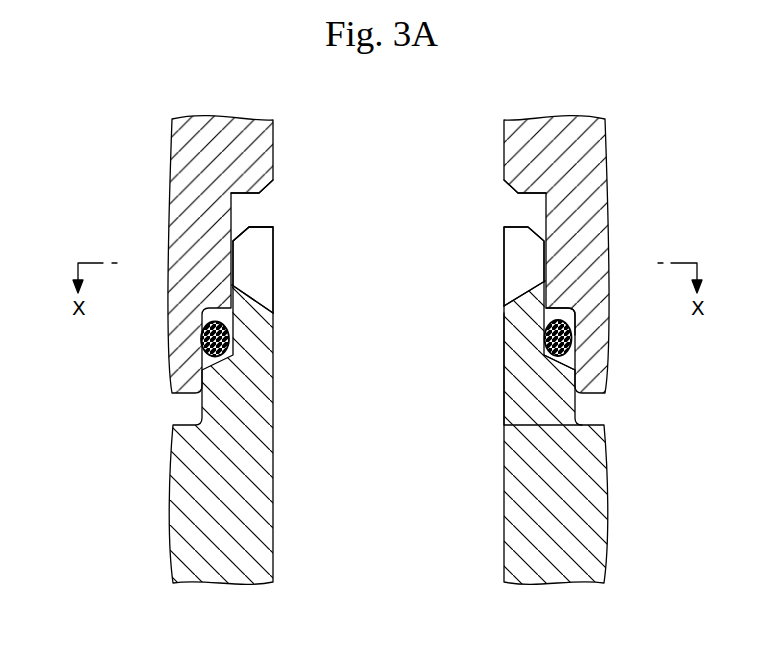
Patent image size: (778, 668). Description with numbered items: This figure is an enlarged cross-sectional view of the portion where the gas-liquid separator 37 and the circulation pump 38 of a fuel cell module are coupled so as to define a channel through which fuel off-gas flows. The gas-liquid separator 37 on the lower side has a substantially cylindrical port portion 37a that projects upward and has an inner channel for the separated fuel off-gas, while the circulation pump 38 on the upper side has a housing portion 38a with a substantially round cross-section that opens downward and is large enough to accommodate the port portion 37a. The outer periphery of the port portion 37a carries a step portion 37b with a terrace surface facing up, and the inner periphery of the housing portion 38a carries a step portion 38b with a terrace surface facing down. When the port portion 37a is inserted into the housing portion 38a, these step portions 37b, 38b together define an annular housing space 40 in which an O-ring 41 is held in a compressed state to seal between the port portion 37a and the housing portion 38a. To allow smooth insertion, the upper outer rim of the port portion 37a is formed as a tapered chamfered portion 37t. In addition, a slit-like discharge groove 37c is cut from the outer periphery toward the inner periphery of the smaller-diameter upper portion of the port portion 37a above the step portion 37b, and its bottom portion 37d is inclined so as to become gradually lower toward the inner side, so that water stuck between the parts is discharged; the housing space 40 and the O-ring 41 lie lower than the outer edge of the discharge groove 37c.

The gas-liquid separator 37 is at (596, 503).
The port portion 37a is at (530, 345).
The step portion (outer periphery step portion) 37b is at (567, 349).
The discharge groove 37c is at (262, 258).
The bottom portion of the discharge groove 37d is at (250, 298).
The chamfered portion 37t is at (240, 234).
The circulation pump 38 is at (590, 161).
The housing portion 38a is at (542, 207).
The step portion (inner periphery step portion) 38b is at (574, 309).
The housing space 40 is at (572, 334).
The O-ring 41 is at (215, 338).